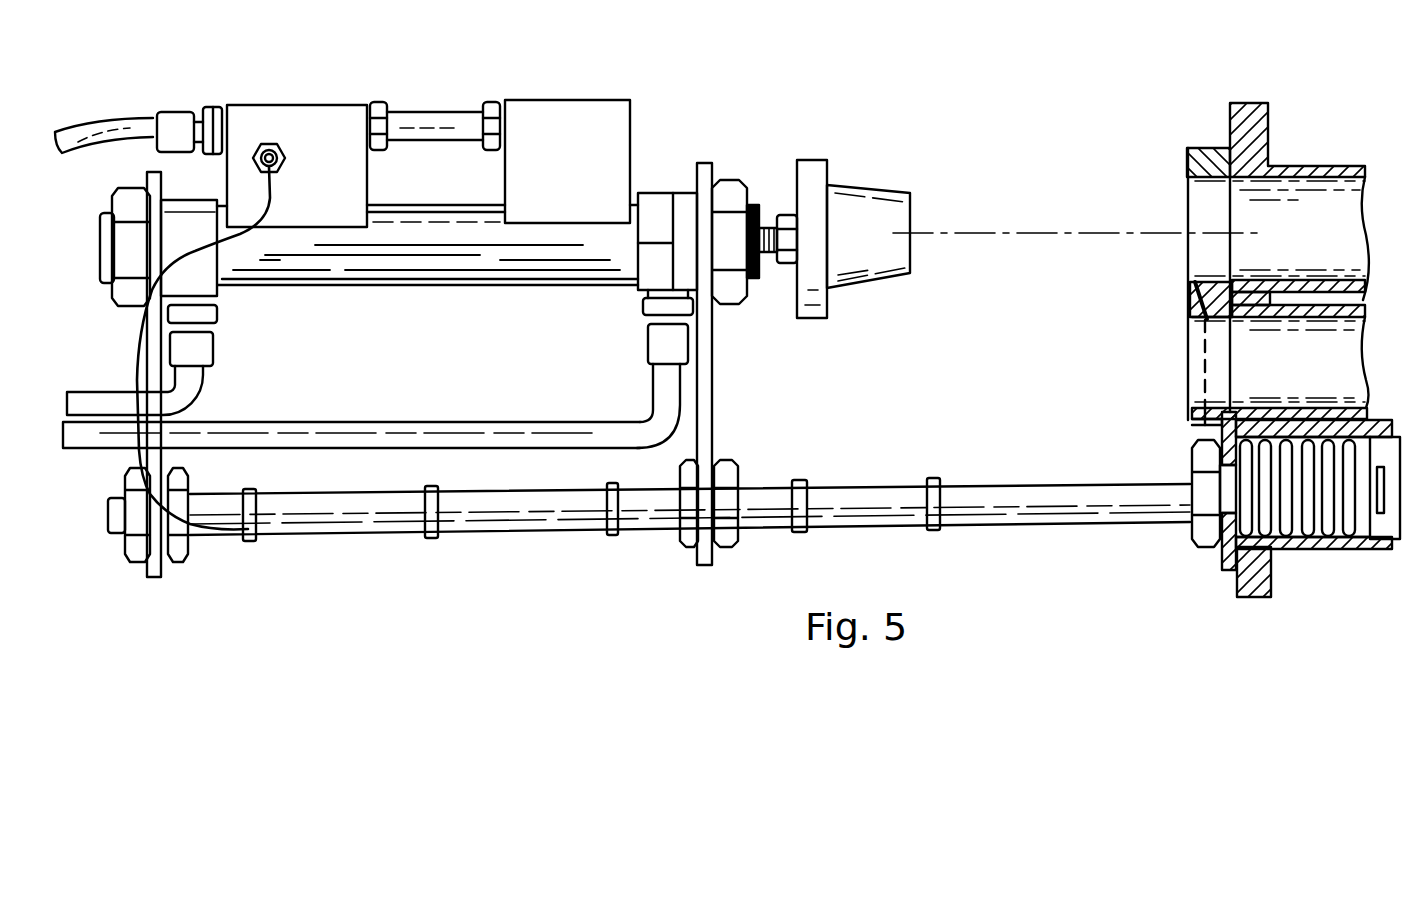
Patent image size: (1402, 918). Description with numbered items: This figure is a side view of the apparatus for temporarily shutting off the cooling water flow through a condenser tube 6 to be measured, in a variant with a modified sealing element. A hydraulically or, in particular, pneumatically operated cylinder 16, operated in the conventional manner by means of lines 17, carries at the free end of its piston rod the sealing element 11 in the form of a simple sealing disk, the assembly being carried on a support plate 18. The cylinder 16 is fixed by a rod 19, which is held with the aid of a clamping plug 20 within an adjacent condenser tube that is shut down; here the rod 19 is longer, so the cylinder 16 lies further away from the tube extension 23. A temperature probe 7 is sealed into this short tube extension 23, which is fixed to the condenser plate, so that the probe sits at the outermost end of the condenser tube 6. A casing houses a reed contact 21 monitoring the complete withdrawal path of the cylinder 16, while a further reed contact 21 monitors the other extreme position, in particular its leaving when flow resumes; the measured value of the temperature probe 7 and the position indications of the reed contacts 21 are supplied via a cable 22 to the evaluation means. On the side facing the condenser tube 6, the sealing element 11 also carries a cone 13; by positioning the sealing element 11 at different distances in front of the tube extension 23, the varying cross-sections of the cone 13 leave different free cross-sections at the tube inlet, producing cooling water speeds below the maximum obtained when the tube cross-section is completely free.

The condenser tube 6 is at (1310, 196).
The temperature probe 7 is at (1193, 290).
The sealing element 11 is at (812, 173).
The cone 13 is at (880, 207).
The cylinder 16 is at (531, 262).
The lines 17 is at (88, 432).
The support plate 18 is at (707, 383).
The rod 19 is at (535, 505).
The clamping plug 20 is at (1317, 512).
The reed contact 21 is at (300, 112).
The cable 22 is at (110, 123).
The tube extension 23 is at (1205, 157).